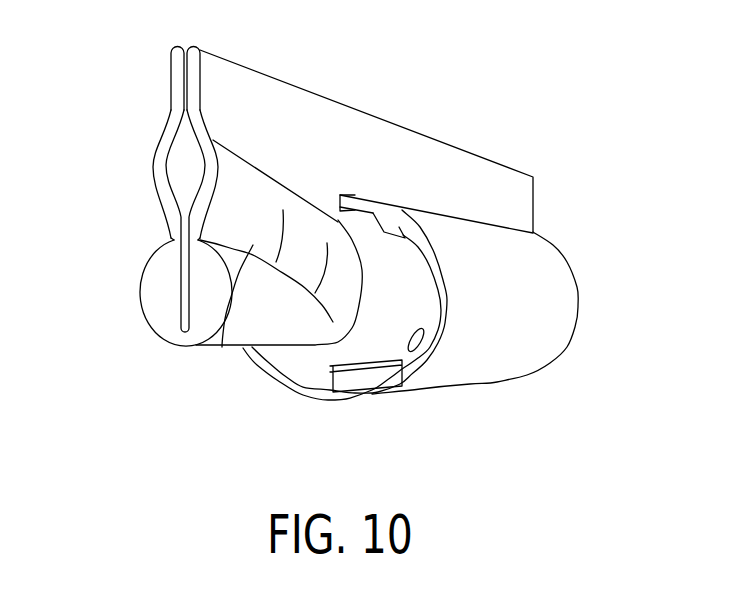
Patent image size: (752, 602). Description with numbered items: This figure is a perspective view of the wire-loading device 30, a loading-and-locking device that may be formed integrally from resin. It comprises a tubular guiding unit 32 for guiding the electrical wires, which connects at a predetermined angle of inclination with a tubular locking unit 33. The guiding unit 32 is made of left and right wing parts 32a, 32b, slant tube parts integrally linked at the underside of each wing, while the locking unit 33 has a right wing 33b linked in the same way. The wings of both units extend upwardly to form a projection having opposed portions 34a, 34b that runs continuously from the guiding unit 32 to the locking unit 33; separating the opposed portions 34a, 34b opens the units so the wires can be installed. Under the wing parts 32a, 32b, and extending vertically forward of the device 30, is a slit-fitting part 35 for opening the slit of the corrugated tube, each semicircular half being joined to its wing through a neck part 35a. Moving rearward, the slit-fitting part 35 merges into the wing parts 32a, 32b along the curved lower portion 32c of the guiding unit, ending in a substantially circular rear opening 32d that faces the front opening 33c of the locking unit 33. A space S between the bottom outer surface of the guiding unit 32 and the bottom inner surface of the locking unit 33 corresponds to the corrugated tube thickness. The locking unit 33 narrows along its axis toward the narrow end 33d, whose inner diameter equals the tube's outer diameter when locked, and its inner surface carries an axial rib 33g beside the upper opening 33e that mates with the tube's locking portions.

The wire-loading device 30 is at (451, 62).
The tubular guiding unit 32 is at (152, 166).
The left wing part 32a is at (158, 144).
The right wing part 32b is at (218, 170).
The curved front face edge of clip 32c is at (227, 342).
The rear opening 32d is at (298, 346).
The tubular locking unit 33 is at (493, 380).
The right wing 33b is at (552, 268).
The front opening 33c is at (402, 392).
The narrow end 33d is at (578, 328).
The upper opening 33e is at (352, 211).
The rib 33g is at (390, 216).
The opposed portion 34a is at (172, 73).
The opposed portion 34b is at (200, 78).
The slit-fitting part 35 is at (141, 297).
The neck part 35a is at (172, 238).
The space S is at (280, 366).